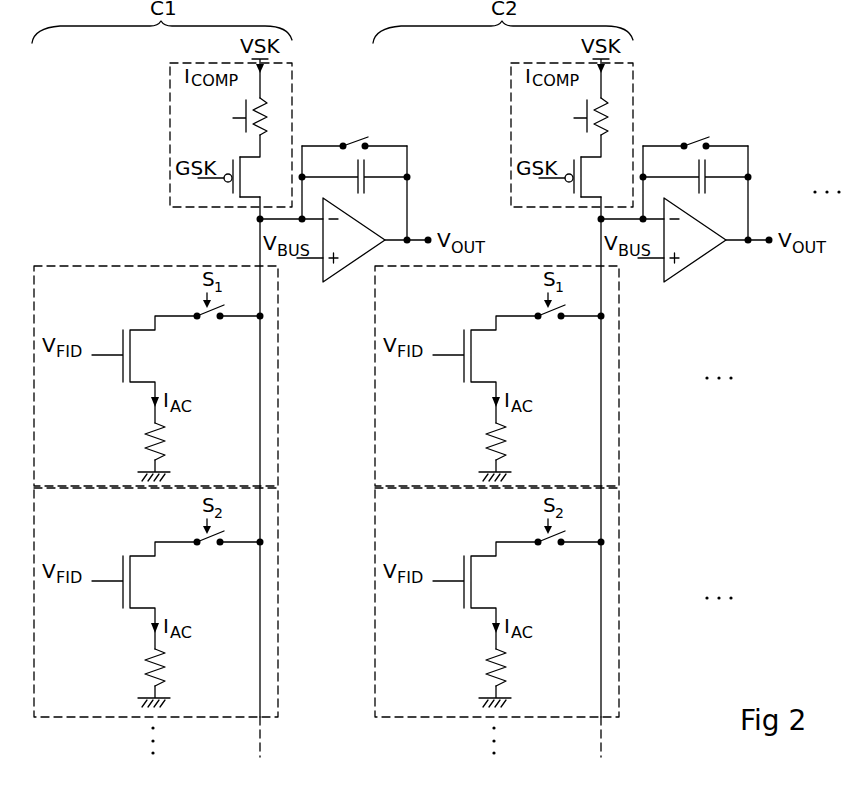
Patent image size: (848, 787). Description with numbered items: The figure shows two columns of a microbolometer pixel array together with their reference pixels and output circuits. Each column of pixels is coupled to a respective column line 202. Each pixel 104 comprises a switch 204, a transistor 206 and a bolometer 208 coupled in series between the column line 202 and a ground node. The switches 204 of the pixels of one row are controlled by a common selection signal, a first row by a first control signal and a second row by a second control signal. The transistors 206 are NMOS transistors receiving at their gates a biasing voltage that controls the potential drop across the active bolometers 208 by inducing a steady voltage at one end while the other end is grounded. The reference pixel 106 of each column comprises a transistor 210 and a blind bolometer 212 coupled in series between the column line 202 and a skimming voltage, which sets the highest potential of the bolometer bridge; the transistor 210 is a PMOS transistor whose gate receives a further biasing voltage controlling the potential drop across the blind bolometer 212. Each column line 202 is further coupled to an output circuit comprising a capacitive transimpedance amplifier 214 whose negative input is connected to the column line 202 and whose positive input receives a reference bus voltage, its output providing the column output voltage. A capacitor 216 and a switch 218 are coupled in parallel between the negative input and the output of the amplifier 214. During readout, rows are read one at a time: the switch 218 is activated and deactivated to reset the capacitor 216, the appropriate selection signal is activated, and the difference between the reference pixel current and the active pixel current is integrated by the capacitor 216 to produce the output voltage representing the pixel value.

The pixel 104 is at (80, 282).
The reference pixel 106 is at (172, 86).
The column line 202 is at (261, 406).
The switch 204 is at (205, 322).
The transistor 206 is at (142, 368).
The bolometer 208 is at (146, 431).
The transistor 210 is at (243, 184).
The blind bolometer 212 is at (233, 118).
The capacitive transimpedance amplifier 214 is at (352, 227).
The capacitor 216 is at (367, 172).
The switch 218 is at (351, 141).